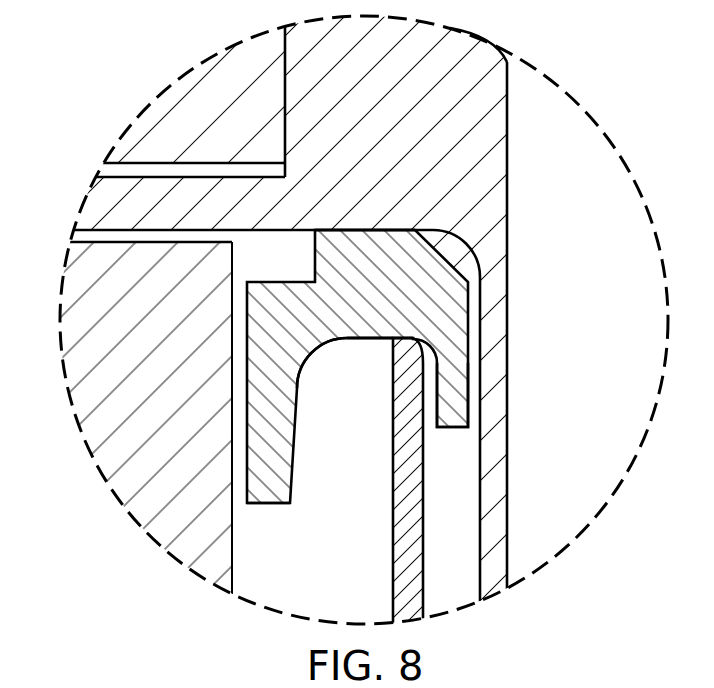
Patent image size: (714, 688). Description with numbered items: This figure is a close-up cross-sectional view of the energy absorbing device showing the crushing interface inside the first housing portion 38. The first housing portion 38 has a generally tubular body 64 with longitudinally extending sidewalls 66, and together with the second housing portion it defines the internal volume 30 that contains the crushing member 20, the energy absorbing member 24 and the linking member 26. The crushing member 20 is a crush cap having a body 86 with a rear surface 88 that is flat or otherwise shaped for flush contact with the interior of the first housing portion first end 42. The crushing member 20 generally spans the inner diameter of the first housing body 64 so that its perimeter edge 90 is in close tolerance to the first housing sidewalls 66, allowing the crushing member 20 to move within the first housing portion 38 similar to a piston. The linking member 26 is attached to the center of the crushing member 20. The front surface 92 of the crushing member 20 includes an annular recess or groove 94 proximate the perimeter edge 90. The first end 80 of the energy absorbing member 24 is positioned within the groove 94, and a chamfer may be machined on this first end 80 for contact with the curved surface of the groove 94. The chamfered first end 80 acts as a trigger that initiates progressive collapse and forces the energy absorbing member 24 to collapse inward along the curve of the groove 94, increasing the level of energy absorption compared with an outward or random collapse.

The crushing member 20 is at (253, 317).
The energy absorbing member 24 is at (402, 556).
The linking member 26 is at (148, 506).
The internal volume 30 is at (265, 557).
The first housing portion 38 is at (462, 162).
The first housing portion first end 42 is at (520, 130).
The tubular body 64 is at (507, 250).
The sidewalls 66 is at (498, 528).
The first end 80 is at (382, 353).
The body 86 is at (435, 296).
The rear surface 88 is at (362, 230).
The perimeter edge 90 is at (462, 382).
The front surface 92 is at (292, 483).
The annular recess or groove 94 is at (353, 342).